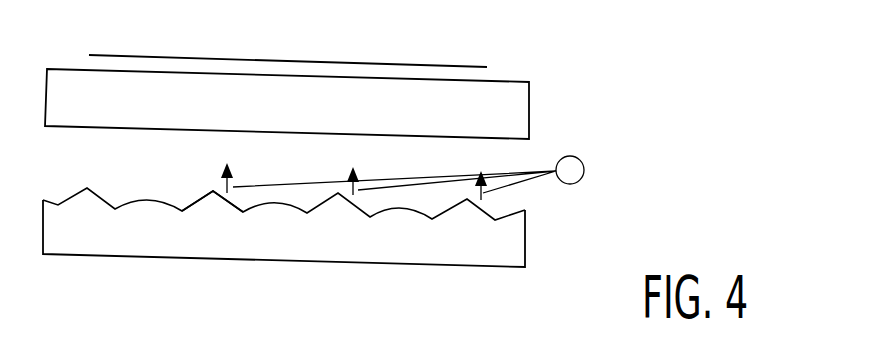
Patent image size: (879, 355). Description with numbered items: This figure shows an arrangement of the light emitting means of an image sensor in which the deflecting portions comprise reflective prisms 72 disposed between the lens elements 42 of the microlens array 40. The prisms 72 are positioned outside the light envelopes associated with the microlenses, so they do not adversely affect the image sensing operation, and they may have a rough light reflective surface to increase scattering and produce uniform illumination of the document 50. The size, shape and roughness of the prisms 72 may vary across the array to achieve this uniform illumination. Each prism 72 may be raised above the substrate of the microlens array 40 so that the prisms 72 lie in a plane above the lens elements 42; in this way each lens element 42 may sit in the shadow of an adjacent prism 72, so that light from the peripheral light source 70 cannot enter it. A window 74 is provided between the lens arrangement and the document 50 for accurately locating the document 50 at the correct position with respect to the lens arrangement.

The microlens array 40 is at (485, 260).
The lens elements 42 is at (151, 207).
The document 50 is at (420, 64).
The peripheral light source 70 is at (584, 170).
The reflective prisms 72 is at (210, 203).
The window 74 is at (520, 108).